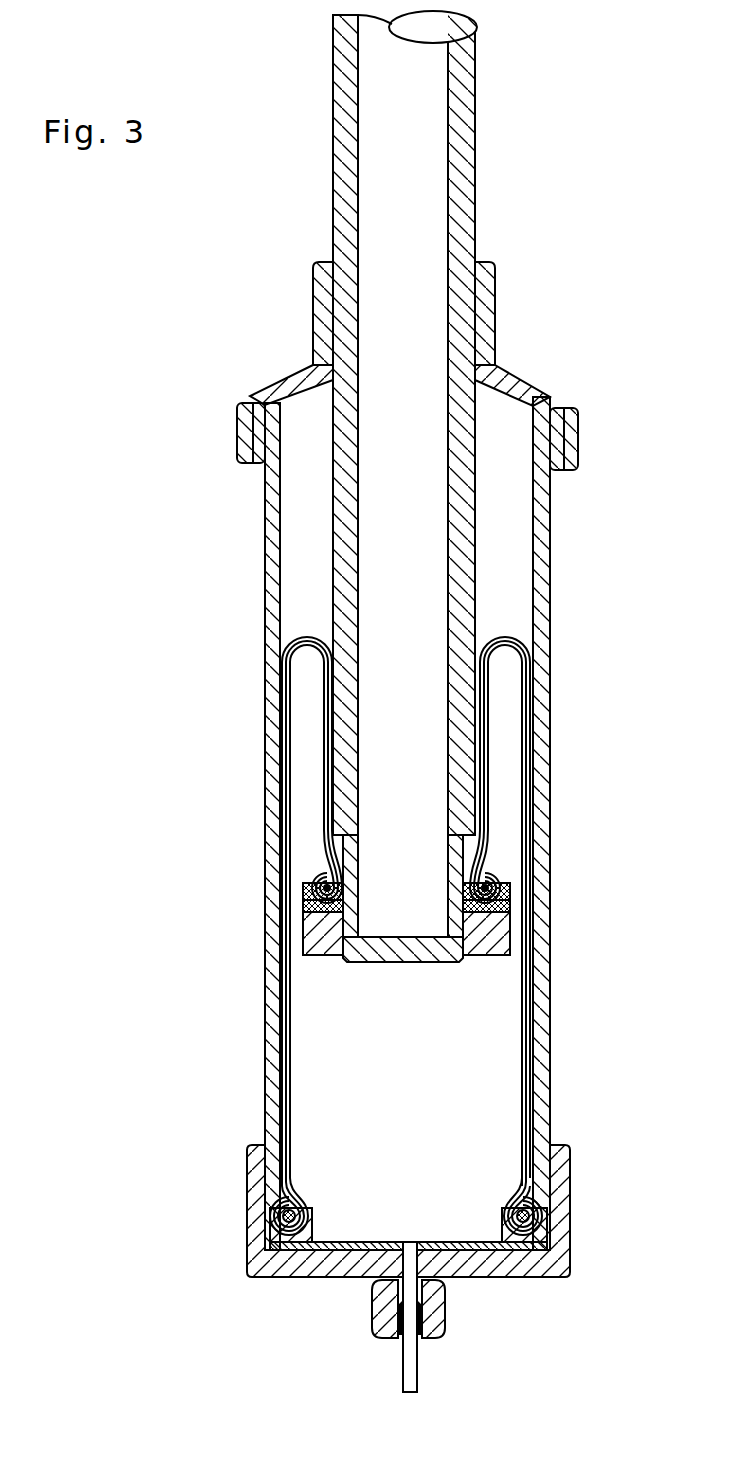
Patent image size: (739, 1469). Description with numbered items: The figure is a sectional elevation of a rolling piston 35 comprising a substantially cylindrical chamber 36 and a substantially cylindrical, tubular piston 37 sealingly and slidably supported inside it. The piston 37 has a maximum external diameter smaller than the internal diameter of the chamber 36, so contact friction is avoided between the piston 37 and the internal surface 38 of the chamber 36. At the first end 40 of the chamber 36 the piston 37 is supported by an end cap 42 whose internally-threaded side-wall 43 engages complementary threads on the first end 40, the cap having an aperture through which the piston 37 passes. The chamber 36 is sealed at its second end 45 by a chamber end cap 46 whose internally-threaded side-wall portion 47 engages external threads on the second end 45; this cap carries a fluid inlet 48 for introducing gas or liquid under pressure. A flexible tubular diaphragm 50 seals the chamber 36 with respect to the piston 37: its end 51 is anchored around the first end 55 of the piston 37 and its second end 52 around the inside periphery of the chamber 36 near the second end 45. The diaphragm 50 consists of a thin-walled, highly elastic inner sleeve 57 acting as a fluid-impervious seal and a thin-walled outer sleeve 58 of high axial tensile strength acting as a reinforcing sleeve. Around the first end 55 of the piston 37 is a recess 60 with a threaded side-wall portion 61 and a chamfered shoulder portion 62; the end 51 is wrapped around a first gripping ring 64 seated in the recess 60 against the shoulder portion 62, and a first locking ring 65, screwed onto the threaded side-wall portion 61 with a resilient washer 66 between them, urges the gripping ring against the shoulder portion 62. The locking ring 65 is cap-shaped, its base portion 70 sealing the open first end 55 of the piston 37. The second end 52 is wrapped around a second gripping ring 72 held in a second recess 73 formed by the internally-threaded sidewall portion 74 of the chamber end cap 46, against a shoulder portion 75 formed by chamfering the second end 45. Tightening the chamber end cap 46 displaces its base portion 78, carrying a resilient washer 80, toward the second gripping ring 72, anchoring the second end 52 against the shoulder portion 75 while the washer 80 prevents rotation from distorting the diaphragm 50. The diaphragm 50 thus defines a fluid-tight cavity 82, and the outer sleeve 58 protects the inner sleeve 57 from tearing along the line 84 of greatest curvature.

The rolling piston 35 is at (540, 354).
The chamber 36 is at (552, 800).
The piston 37 is at (466, 206).
The internal surface 38 is at (526, 600).
The first end 40 is at (540, 423).
The end cap 42 is at (290, 382).
The internally-threaded side-wall 43 is at (258, 470).
The second end 45 is at (540, 1192).
The chamber end cap 46 is at (508, 1280).
The internally-threaded side-wall portion 47 is at (256, 1147).
The fluid inlet 48 is at (402, 1370).
The flexible tubular diaphragm 50 is at (528, 640).
The end of the diaphragm 51 is at (506, 886).
The second end of the diaphragm 52 is at (303, 1205).
The first end of the piston 55 is at (447, 922).
The inner sleeve 57 is at (292, 1068).
The outer sleeve 58 is at (266, 1003).
The recess 60 is at (510, 926).
The threaded side-wall portion 61 is at (345, 908).
The chamfered shoulder portion 62 is at (336, 873).
The first gripping ring 64 is at (303, 886).
The first locking ring 65 is at (303, 935).
The resilient washer 66 is at (508, 906).
The base portion 70 is at (385, 962).
The second gripping ring 72 is at (552, 1228).
The second recess 73 is at (268, 1218).
The internally-threaded sidewall portion 74 is at (537, 1225).
The shoulder portion 75 is at (278, 1197).
The base portion 78 is at (370, 1243).
The resilient washer 80 is at (500, 1222).
The fluid-tight cavity 82 is at (424, 1157).
The line 84 is at (302, 628).